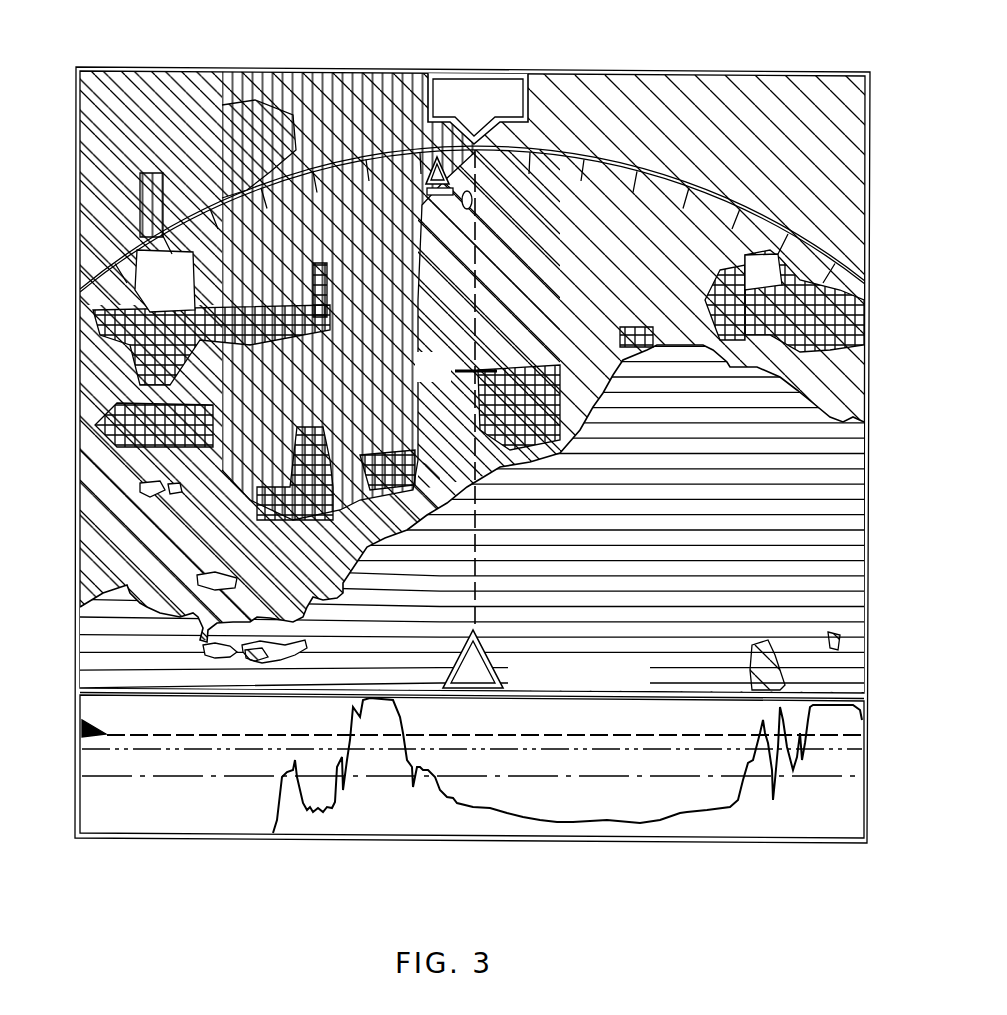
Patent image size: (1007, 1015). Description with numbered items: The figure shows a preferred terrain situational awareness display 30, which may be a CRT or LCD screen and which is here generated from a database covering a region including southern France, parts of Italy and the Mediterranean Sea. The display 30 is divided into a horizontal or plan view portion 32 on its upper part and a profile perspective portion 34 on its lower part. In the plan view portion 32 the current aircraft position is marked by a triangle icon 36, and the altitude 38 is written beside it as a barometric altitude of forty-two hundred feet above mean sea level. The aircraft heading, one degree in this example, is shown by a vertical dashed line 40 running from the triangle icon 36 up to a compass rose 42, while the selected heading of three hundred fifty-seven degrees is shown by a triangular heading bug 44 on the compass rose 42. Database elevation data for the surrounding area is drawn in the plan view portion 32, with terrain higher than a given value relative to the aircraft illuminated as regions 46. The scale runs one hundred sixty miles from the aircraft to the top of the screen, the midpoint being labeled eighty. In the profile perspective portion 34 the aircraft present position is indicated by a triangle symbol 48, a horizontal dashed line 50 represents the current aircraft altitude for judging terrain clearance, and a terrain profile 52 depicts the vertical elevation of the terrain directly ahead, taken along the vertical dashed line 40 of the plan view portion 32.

The terrain situational awareness display 30 is at (685, 843).
The horizontal or plan view portion 32 is at (505, 458).
The profile perspective portion 34 is at (503, 801).
The triangle icon 36 is at (480, 690).
The altitude 38 is at (548, 688).
The vertical dashed line 40 is at (473, 183).
The compass rose 42 is at (587, 153).
The triangular heading bug 44 is at (420, 163).
The regions 46 is at (730, 270).
The triangle symbol 48 is at (97, 733).
The horizontal dashed line 50 is at (182, 737).
The terrain profile 52 is at (340, 800).